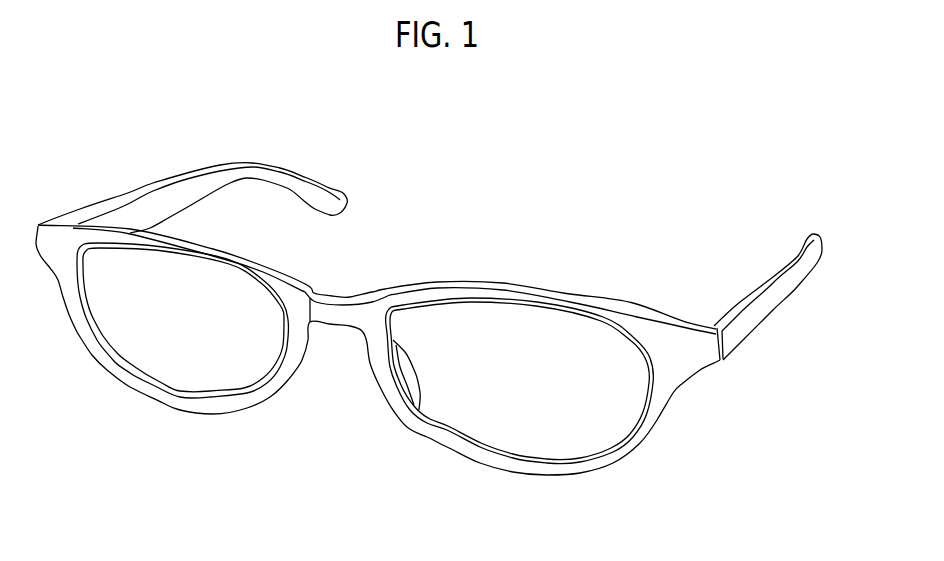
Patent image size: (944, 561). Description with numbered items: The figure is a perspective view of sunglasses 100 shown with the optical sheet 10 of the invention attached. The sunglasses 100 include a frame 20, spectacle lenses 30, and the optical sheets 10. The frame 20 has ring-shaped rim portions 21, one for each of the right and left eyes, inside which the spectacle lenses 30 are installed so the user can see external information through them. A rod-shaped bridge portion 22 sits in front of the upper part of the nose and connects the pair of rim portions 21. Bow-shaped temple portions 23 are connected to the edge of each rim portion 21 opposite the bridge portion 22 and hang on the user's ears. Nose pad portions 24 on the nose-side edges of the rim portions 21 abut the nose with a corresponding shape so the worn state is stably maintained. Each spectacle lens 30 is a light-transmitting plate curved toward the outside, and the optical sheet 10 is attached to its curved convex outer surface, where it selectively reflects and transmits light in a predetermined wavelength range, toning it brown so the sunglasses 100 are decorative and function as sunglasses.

The sunglasses 100 is at (677, 150).
The optical sheet 10 is at (386, 381).
The frame 20 is at (633, 303).
The rim portion 21 is at (212, 257).
The bridge portion 22 is at (338, 310).
The temple portion 23 is at (147, 185).
The nose pad portion 24 is at (297, 345).
The spectacle lens 30 is at (205, 372).